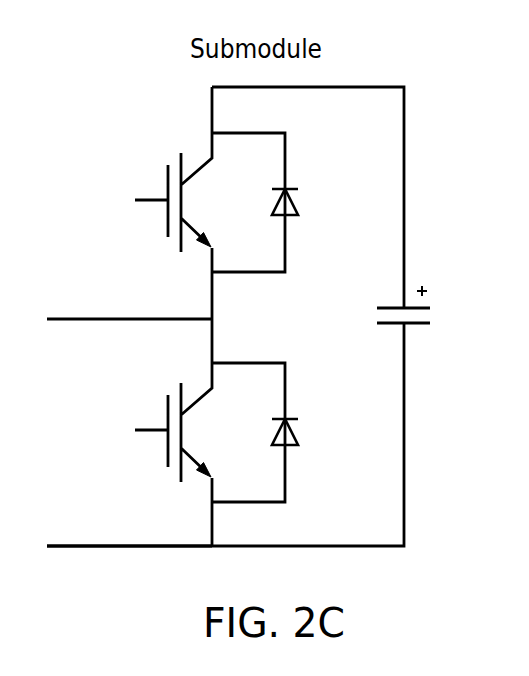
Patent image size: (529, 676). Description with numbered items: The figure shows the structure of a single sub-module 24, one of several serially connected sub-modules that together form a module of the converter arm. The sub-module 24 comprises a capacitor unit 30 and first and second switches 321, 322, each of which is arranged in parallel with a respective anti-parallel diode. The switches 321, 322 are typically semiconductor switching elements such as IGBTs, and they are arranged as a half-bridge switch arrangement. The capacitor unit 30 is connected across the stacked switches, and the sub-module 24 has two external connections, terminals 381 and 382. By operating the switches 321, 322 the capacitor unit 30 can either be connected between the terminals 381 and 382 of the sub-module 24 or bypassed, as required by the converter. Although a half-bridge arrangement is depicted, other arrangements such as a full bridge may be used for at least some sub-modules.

The sub-module 24 is at (386, 87).
The capacitor unit 30 is at (428, 322).
The first switch 321 is at (137, 200).
The second switch 322 is at (137, 430).
The first terminal 381 is at (63, 317).
The second terminal 382 is at (63, 544).